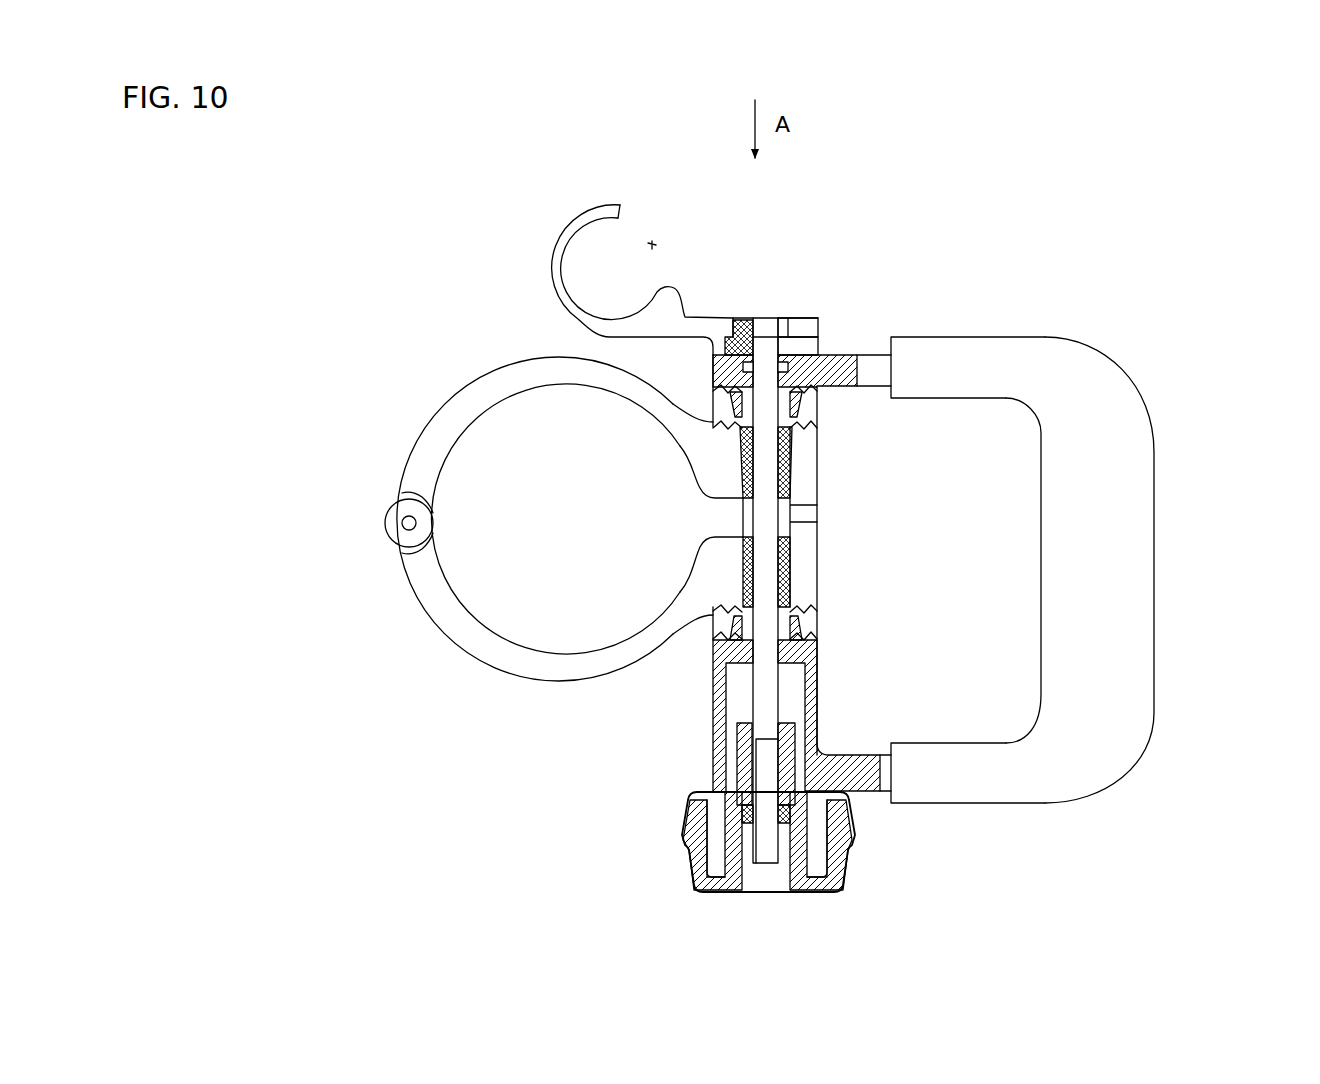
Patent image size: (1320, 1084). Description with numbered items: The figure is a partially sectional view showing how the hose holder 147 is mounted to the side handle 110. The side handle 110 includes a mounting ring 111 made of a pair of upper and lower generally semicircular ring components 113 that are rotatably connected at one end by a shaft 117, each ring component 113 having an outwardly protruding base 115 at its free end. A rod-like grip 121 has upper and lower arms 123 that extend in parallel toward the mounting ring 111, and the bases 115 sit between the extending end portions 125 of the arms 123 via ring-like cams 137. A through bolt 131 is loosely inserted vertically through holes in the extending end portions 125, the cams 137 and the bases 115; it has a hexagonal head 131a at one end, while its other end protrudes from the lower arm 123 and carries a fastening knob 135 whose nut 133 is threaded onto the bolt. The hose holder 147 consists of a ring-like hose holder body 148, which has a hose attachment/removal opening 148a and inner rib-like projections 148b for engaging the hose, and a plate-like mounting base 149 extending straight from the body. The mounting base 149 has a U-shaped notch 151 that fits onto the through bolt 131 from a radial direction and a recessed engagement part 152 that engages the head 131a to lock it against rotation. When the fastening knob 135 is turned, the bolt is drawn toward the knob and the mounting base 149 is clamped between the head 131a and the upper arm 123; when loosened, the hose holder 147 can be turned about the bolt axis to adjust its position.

The side handle 110 is at (1118, 330).
The mounting ring 111 is at (433, 430).
The ring components 113 is at (492, 395).
The base 115 is at (812, 487).
The shaft 117 is at (408, 525).
The grip 121 is at (1143, 509).
The arms 123 is at (992, 338).
The extending end portions 125 is at (870, 362).
The through bolt 131 is at (772, 689).
The head 131a is at (770, 320).
The nut 133 is at (742, 818).
The fastening knob 135 is at (700, 868).
The cams 137 is at (812, 410).
The hose holder 147 is at (553, 222).
The hose holder body 148 is at (548, 268).
The hose attachment/removal opening 148a is at (655, 242).
The rib-like projections 148b is at (620, 207).
The mounting base 149 is at (735, 320).
The notch 151 is at (806, 326).
The recessed engagement part 152 is at (810, 348).